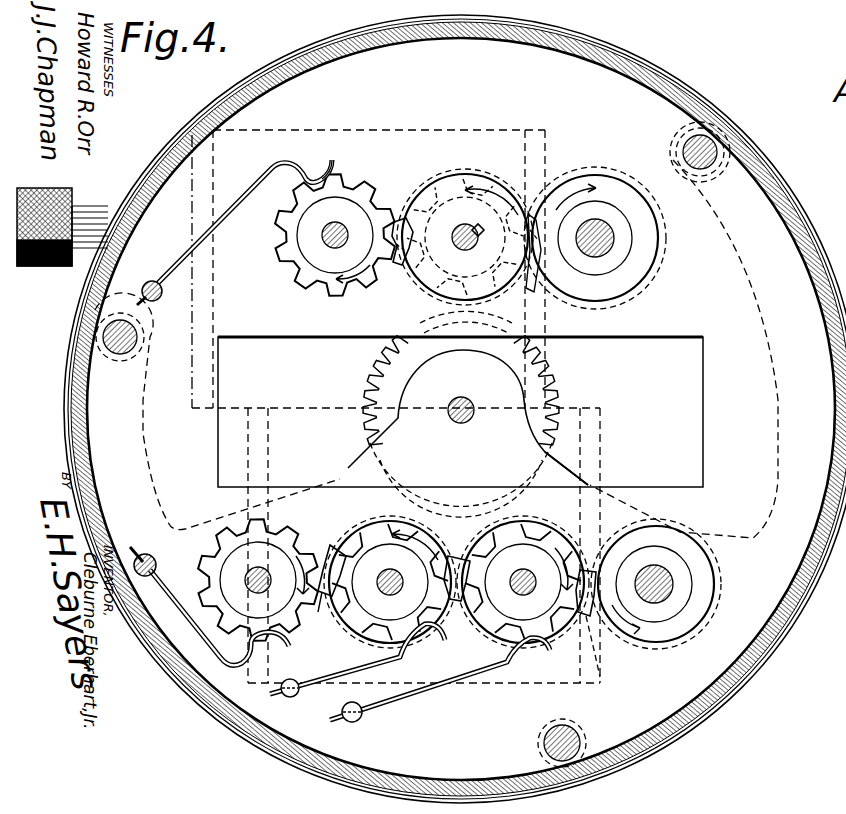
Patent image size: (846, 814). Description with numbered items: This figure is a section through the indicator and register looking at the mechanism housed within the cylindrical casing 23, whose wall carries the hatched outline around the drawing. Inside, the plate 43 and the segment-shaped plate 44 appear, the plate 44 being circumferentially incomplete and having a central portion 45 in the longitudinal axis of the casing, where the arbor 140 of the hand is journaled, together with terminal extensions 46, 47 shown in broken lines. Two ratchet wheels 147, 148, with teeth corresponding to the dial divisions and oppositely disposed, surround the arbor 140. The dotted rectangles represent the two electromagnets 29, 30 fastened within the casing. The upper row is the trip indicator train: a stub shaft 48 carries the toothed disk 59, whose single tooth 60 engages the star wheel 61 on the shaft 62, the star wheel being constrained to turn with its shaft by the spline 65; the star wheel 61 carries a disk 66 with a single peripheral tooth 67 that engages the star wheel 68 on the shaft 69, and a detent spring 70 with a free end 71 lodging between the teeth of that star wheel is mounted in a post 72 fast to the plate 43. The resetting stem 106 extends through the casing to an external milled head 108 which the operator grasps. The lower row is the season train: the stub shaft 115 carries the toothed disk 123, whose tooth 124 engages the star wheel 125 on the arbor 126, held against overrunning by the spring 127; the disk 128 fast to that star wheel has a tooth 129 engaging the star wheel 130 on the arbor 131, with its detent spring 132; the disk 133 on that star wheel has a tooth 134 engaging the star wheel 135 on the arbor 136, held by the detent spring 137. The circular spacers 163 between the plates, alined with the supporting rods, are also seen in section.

The casing 23 is at (730, 760).
The electromagnet 29 is at (532, 130).
The electromagnet 30 is at (588, 686).
The plate 43 is at (481, 412).
The plate 44 is at (570, 467).
The central portion 45 is at (468, 417).
The terminal extension 46 is at (150, 432).
The terminal extension 47 is at (750, 278).
The stub shaft 48 is at (604, 225).
The toothed disk 59 is at (616, 195).
The tooth 60 is at (536, 222).
The star wheel 61 is at (478, 190).
The shaft 62 is at (456, 227).
The spline 65 is at (488, 239).
The disk 66 is at (408, 218).
The tooth 67 is at (400, 262).
The star wheel 68 is at (343, 190).
The shaft 69 is at (330, 248).
The detent spring 70 is at (228, 215).
The free end 71 is at (310, 172).
The post 72 is at (148, 278).
The stem 106 is at (96, 210).
The milled head 108 is at (45, 270).
The stub shaft 115 is at (655, 602).
The toothed disk 123 is at (672, 540).
The tooth 124 is at (600, 677).
The star wheel 125 is at (552, 560).
The arbor 126 is at (519, 594).
The spring 127 is at (482, 690).
The disk 128 is at (496, 540).
The tooth 129 is at (456, 556).
The star wheel 130 is at (368, 540).
The arbor 131 is at (386, 594).
The detent spring 132 is at (356, 672).
The disk 133 is at (338, 548).
The tooth 134 is at (322, 610).
The star wheel 135 is at (228, 548).
The arbor 136 is at (248, 574).
The detent spring 137 is at (198, 640).
The arbor 140 is at (459, 423).
The ratchet wheel 147 is at (388, 393).
The ratchet wheel 148 is at (366, 375).
The spacer 163 is at (706, 160).